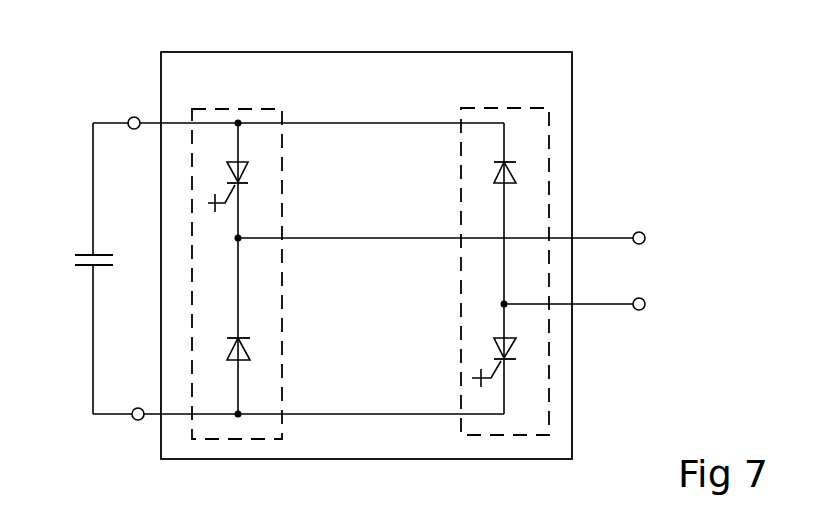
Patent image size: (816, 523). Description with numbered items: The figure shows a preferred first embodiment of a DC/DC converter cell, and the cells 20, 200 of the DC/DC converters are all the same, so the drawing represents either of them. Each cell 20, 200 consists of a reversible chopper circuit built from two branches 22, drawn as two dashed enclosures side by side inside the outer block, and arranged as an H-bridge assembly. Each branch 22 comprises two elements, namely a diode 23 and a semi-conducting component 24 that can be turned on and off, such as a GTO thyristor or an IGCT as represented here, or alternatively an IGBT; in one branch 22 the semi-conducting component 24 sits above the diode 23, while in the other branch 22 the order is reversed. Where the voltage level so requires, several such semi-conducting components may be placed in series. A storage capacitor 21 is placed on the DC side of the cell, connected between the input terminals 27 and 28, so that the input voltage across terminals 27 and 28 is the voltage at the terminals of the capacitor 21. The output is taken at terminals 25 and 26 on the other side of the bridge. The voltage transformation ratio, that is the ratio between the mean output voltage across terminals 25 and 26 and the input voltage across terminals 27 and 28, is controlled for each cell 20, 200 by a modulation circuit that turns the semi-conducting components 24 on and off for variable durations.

The cell 20 is at (437, 233).
The cell 200 is at (548, 95).
The storage capacitor 21 is at (70, 236).
The branch 22 is at (285, 150).
The diode 23 is at (493, 173).
The semi-conducting component 24 is at (245, 172).
The terminal 25 is at (665, 229).
The terminal 26 is at (665, 315).
The terminal 27 is at (121, 101).
The terminal 28 is at (120, 438).